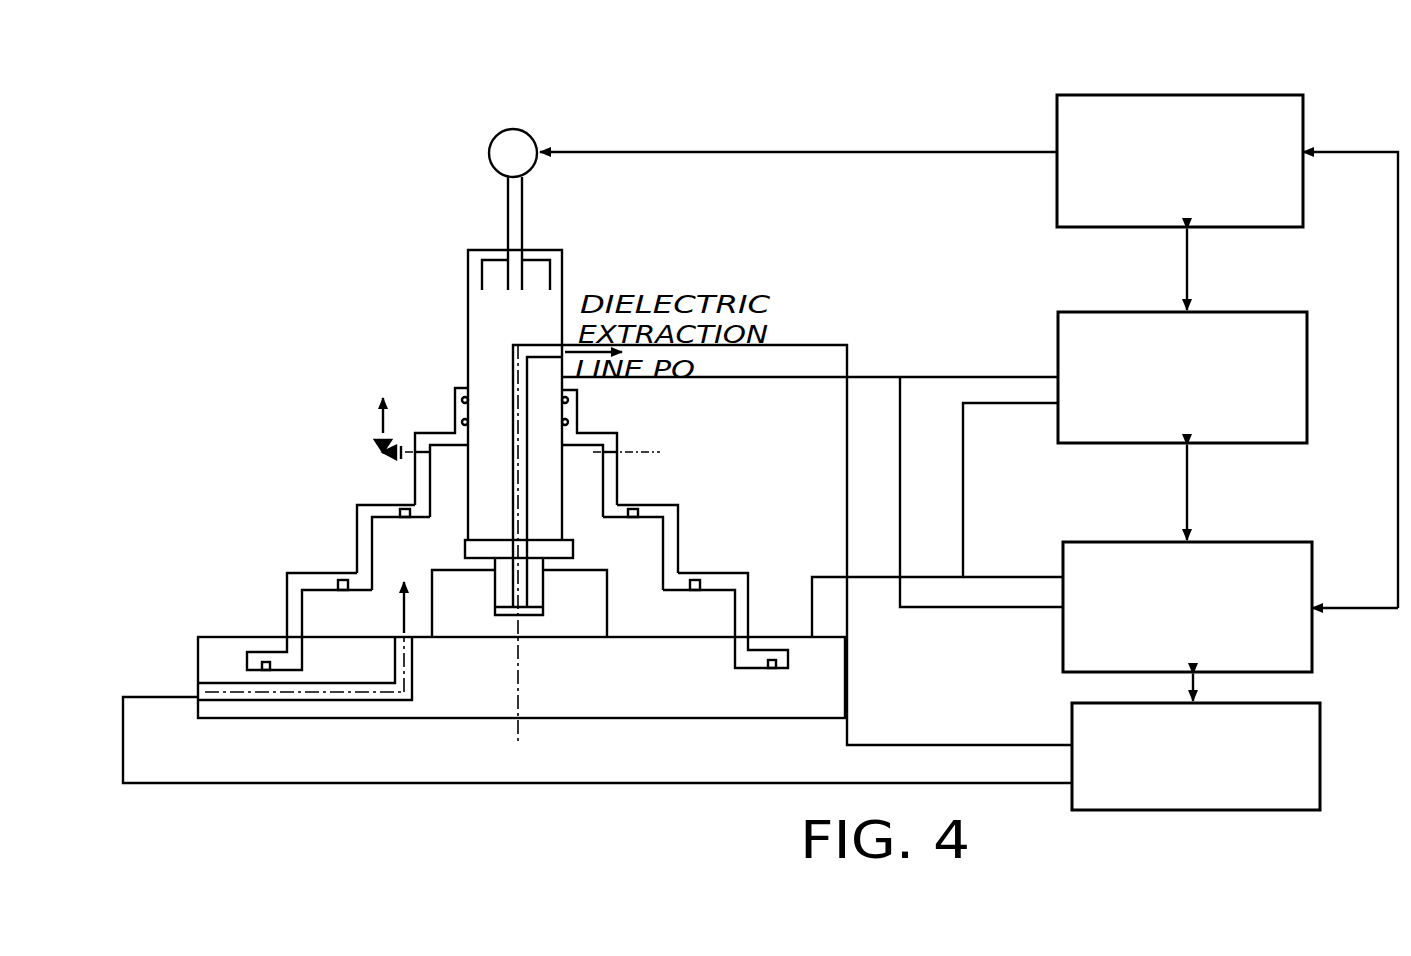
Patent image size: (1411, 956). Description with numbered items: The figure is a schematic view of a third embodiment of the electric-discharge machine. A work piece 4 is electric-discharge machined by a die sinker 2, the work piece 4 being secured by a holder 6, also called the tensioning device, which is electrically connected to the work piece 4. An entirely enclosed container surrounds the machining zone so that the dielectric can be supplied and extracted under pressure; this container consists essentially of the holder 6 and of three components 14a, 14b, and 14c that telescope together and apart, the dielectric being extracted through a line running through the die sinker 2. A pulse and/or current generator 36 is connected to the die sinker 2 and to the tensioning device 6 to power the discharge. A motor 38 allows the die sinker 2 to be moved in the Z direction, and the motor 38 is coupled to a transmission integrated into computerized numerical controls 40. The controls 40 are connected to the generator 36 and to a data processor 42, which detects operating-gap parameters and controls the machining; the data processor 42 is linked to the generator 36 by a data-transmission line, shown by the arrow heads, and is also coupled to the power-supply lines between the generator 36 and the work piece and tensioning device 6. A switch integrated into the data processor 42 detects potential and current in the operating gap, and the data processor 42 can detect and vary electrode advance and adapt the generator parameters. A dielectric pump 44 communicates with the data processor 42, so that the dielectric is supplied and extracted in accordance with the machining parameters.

The die sinker 2 is at (492, 551).
The work piece 4 is at (450, 612).
The holder 6 is at (622, 692).
The telescoping component 14a is at (287, 612).
The telescoping component 14b is at (362, 517).
The telescoping component 14c is at (455, 405).
The pulse and/or current generator 36 is at (1250, 328).
The motor 38 is at (530, 134).
The computerized numerical controls 40 is at (1300, 132).
The data processor 42 is at (1305, 652).
The dielectric pump 44 is at (1310, 756).